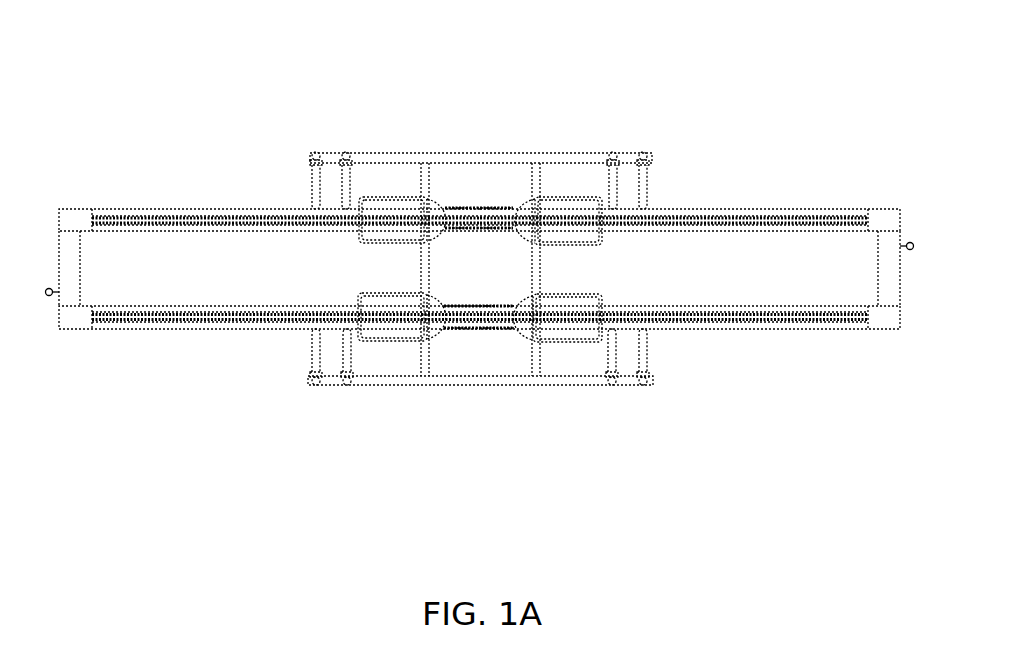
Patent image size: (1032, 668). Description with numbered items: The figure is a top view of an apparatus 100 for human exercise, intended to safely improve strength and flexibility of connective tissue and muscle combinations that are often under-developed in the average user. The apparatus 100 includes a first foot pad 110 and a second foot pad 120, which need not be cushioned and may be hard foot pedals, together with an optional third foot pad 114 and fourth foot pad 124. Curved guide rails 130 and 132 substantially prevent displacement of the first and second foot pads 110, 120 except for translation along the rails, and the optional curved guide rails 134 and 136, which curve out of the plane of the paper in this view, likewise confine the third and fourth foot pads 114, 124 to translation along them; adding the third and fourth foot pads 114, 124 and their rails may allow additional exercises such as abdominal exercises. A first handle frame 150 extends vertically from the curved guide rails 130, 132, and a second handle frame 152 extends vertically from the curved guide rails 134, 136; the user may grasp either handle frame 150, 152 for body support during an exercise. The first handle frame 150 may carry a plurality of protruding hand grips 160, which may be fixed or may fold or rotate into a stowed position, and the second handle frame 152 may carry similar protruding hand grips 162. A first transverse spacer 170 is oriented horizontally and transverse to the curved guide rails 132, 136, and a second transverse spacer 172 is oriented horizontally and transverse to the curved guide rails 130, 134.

The apparatus for human exercise 100 is at (713, 74).
The first foot pad 110 is at (583, 327).
The third foot pad 114 is at (585, 230).
The second foot pad 120 is at (413, 327).
The fourth foot pad 124 is at (412, 230).
The first curved guide rail 130 is at (795, 329).
The second curved guide rail 132 is at (132, 329).
The curved guide rail 134 is at (770, 213).
The curved guide rail 136 is at (115, 212).
The first handle frame 150 is at (473, 386).
The second handle frame 152 is at (483, 157).
The protruding hand grips 160 is at (348, 332).
The protruding hand grips 162 is at (347, 202).
The first transverse spacer 170 is at (80, 292).
The second transverse spacer 172 is at (882, 252).